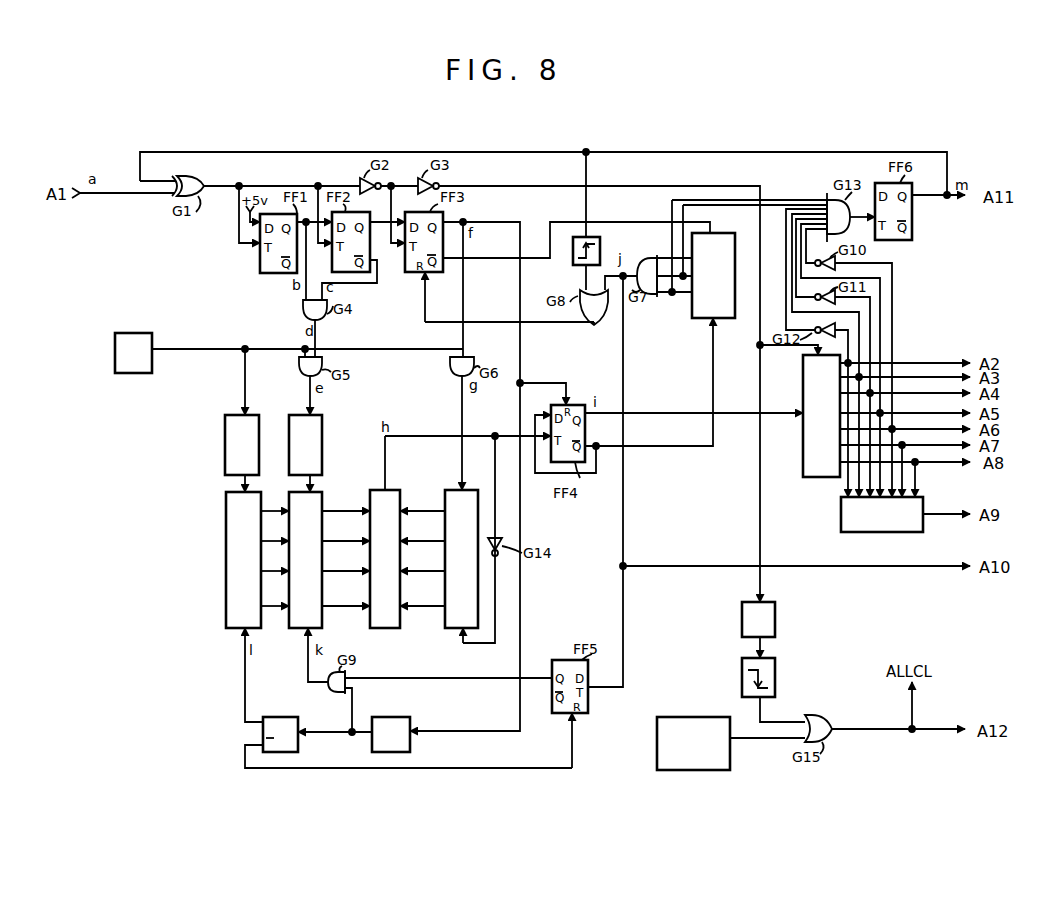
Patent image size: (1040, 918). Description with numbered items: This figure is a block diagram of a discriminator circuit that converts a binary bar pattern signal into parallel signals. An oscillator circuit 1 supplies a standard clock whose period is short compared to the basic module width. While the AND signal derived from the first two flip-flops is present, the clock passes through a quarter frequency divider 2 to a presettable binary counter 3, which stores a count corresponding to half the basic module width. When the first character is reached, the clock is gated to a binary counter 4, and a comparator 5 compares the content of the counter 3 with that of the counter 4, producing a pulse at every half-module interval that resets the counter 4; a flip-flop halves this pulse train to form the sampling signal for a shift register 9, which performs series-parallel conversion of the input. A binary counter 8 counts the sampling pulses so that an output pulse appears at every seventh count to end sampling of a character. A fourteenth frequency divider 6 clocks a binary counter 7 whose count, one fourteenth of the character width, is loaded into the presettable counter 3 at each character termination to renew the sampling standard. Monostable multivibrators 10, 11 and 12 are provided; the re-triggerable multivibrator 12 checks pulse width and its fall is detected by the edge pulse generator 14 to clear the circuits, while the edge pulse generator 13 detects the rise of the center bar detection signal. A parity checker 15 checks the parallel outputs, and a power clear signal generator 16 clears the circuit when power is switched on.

The oscillator circuit 1 is at (148, 333).
The quarter frequency divider 2 is at (320, 418).
The presettable binary counter 3 is at (327, 486).
The binary counter 4 is at (472, 490).
The comparator 5 is at (408, 484).
The fourteenth frequency divider 6 is at (257, 415).
The binary counter 7 is at (264, 484).
The binary counter 8 is at (735, 245).
The shift register 9 is at (803, 477).
The monostable multivibrator 10 is at (392, 717).
The monostable multivibrator 11 is at (284, 717).
The re-triggerable monostable multivibrator 12 is at (782, 606).
The edge pulse generator 13 is at (600, 242).
The edge pulse generator 14 is at (782, 659).
The parity checker 15 is at (841, 530).
The power clear signal generator 16 is at (657, 762).